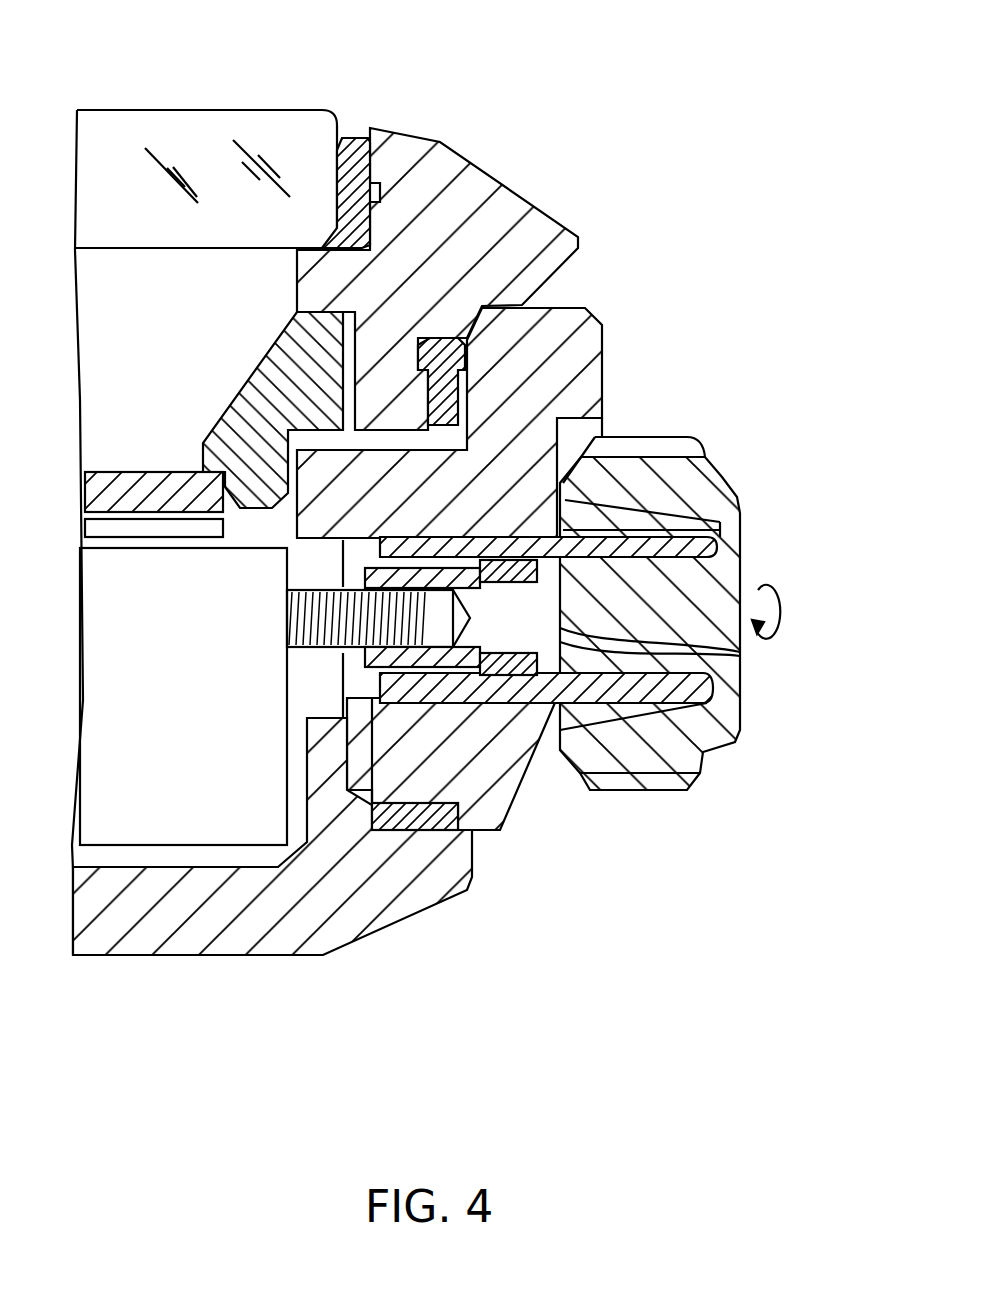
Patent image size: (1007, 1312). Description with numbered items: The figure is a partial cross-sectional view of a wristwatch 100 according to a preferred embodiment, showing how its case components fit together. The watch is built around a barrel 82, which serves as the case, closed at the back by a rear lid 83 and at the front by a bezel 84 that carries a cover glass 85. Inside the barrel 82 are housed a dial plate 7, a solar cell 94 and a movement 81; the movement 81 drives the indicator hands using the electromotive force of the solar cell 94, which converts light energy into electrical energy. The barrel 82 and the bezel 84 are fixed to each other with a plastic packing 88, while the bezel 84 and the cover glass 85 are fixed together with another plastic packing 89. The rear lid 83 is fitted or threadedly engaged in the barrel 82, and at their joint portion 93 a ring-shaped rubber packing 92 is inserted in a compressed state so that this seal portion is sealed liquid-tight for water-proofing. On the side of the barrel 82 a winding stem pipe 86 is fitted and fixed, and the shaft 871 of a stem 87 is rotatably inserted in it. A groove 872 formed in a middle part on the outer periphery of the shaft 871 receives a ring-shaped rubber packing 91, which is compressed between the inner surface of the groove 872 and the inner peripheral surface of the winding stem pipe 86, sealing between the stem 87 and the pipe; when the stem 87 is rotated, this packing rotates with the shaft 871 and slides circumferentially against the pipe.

The wristwatch 100 is at (648, 113).
The cover glass 85 is at (208, 138).
The plastic packing 89 is at (352, 160).
The bezel 84 is at (497, 200).
The plastic packing 88 is at (457, 363).
The barrel 82 is at (587, 347).
The stem 87 is at (685, 483).
The winding stem pipe 86 is at (678, 540).
The groove 872 is at (565, 620).
The shaft 871 is at (702, 762).
The movement 81 is at (268, 742).
The rubber packing 91 is at (520, 680).
The rubber packing 92 is at (430, 823).
The joint portion 93 is at (417, 833).
The rear lid 83 is at (240, 937).
The dial plate 7 is at (160, 490).
The solar cell 94 is at (210, 527).